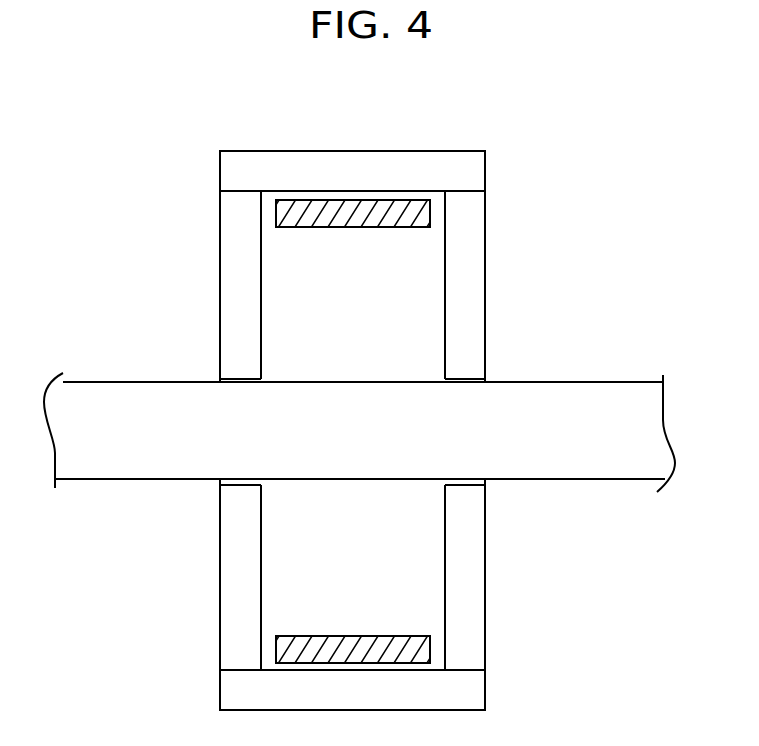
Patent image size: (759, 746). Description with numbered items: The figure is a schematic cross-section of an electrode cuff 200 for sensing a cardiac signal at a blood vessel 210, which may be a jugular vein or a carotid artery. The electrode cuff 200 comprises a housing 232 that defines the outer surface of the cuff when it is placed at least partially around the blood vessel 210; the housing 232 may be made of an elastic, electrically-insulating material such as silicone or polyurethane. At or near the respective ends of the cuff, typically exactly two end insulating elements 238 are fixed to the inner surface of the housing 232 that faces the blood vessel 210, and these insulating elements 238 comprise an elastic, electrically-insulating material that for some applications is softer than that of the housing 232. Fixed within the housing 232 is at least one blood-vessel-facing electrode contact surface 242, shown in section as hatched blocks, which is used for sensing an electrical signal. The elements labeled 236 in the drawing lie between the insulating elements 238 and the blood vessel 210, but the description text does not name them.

The electrode cuff 200 is at (590, 230).
The blood vessel 210 is at (604, 382).
The housing 232 is at (297, 152).
The bearing pad 236 is at (238, 381).
The end insulating elements 238 is at (229, 279).
The electrode contact surface 242 is at (332, 228).